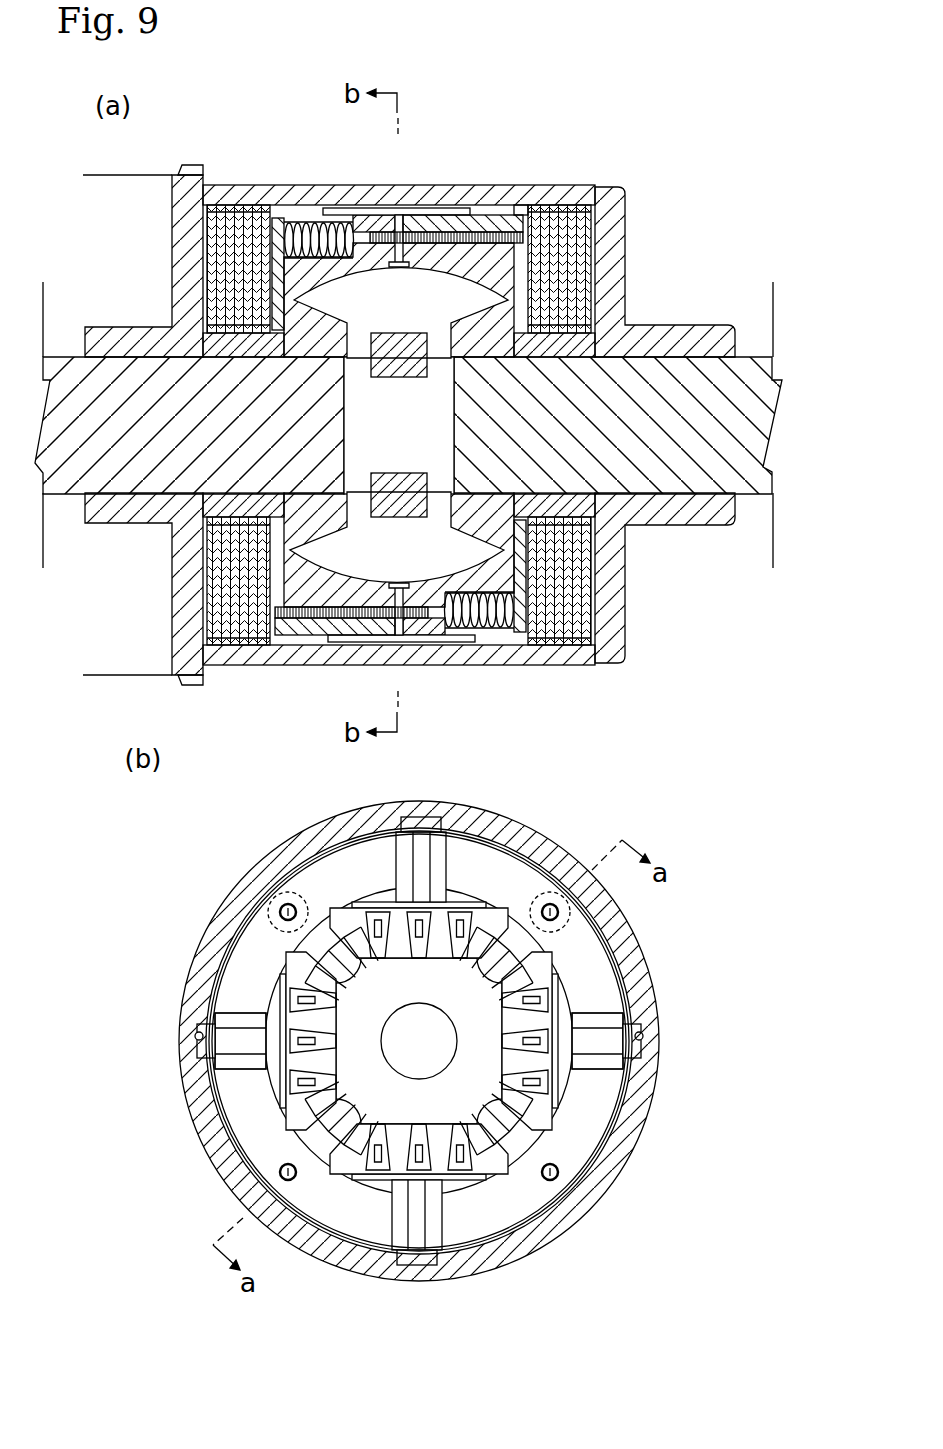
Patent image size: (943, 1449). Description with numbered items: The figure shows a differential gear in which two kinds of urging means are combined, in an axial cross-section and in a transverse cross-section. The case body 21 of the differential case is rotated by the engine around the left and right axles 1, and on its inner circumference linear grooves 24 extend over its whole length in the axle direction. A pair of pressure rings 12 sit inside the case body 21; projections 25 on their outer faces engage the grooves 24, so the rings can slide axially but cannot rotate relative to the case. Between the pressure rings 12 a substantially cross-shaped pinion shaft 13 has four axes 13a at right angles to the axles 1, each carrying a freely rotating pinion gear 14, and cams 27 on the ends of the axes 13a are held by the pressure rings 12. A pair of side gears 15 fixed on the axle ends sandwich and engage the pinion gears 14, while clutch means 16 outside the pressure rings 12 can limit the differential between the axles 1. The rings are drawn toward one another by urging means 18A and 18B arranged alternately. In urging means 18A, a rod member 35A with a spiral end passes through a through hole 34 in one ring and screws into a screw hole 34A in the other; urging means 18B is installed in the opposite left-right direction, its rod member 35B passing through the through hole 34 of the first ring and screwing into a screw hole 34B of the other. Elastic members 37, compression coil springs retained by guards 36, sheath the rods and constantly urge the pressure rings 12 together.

The axle 1 is at (50, 520).
The pressure ring 12 is at (392, 213).
The pinion shaft 13 is at (372, 407).
The axis 13a is at (421, 1065).
The pinion gear 14 is at (450, 903).
The side gear 15 is at (495, 353).
The clutch means 16 is at (235, 183).
The urging means 18A is at (481, 204).
The urging means 18B is at (478, 637).
The case body 21 is at (583, 858).
The groove 24 is at (197, 1053).
The projection 25 is at (195, 1037).
The cam 27 is at (232, 1022).
The through hole 34 is at (365, 207).
The screw hole 34A is at (590, 198).
The screw hole 34B is at (326, 640).
The rod member 35A is at (476, 228).
The rod member 35B is at (440, 628).
The guard 36 is at (262, 200).
The elastic member 37 is at (284, 216).